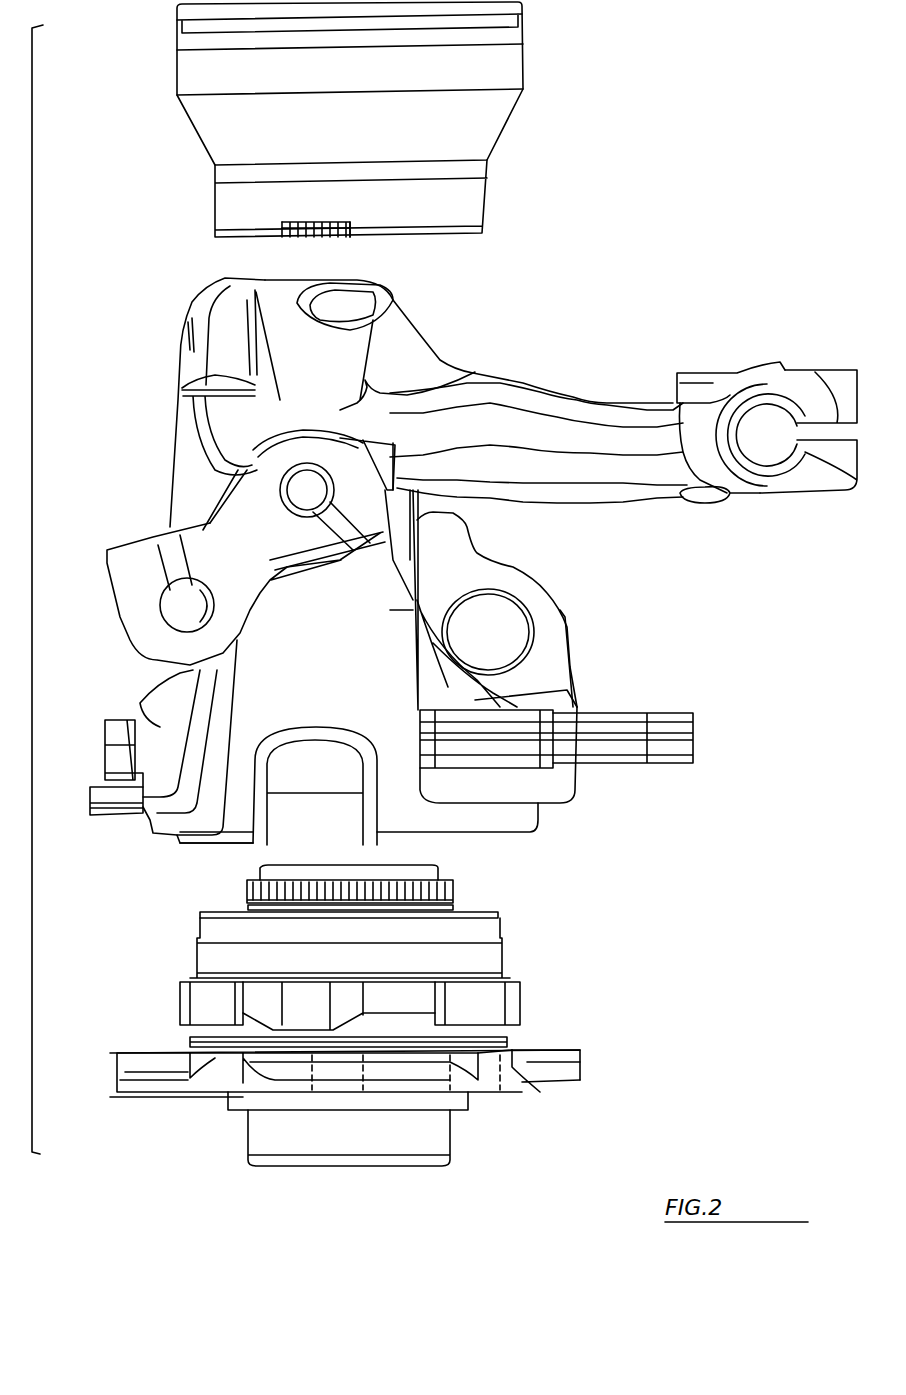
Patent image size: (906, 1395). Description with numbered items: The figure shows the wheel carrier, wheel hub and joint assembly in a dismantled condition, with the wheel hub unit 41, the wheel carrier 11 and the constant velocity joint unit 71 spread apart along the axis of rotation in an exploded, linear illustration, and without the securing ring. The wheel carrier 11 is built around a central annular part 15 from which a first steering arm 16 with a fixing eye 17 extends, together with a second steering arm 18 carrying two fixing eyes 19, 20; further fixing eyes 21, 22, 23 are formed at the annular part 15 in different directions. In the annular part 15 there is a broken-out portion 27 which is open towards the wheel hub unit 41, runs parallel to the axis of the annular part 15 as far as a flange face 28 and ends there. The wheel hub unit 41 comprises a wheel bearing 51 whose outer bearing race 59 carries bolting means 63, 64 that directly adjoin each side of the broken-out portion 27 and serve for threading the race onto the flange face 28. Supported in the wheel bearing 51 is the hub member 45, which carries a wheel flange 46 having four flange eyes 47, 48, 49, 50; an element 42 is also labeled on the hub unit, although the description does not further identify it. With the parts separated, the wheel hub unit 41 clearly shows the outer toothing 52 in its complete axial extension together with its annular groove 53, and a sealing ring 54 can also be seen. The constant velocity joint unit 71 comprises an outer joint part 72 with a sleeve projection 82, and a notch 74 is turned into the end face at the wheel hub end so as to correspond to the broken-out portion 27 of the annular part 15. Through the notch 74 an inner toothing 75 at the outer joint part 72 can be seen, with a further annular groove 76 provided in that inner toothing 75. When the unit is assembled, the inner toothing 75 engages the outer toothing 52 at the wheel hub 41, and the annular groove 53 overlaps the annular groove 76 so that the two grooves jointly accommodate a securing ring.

The wheel carrier 11 is at (643, 575).
The annular part 15 is at (167, 727).
The first steering arm 16 is at (593, 403).
The fixing eye 17 is at (780, 380).
The second steering arm 18 is at (200, 517).
The fixing eye 19 is at (130, 587).
The fixing eye 20 is at (267, 488).
The fixing eye 21 is at (530, 593).
The fixing eye 22 is at (690, 712).
The fixing eye 23 is at (573, 710).
The broken-out portion 27 is at (305, 805).
The flange face 28 is at (216, 848).
The wheel hub unit 41 is at (372, 1101).
The spindle 42 is at (447, 1135).
The hub member 45 is at (468, 1093).
The wheel flange 46 is at (307, 1083).
The flange eye 47 is at (125, 1075).
The flange eye 48 is at (220, 1067).
The flange eye 49 is at (500, 1068).
The flange eye 50 is at (567, 1063).
The wheel bearing 51 is at (389, 982).
The outer toothing 52 is at (455, 882).
The annular groove 53 is at (460, 898).
The sealing ring 54 is at (498, 912).
The outer bearing race 59 is at (500, 1037).
The bolting means 63 is at (415, 995).
The bolting means 64 is at (213, 1002).
The constant velocity joint unit 71 is at (406, 119).
The outer joint part 72 is at (516, 72).
The notch 74 is at (285, 222).
The inner toothing 75 is at (306, 222).
The annular groove 76 is at (330, 222).
The sleeve projection 82 is at (462, 212).